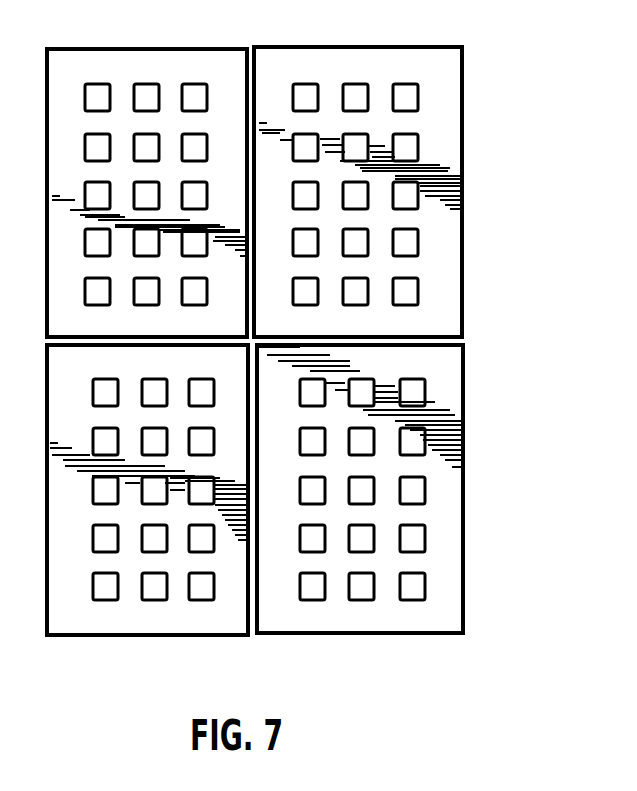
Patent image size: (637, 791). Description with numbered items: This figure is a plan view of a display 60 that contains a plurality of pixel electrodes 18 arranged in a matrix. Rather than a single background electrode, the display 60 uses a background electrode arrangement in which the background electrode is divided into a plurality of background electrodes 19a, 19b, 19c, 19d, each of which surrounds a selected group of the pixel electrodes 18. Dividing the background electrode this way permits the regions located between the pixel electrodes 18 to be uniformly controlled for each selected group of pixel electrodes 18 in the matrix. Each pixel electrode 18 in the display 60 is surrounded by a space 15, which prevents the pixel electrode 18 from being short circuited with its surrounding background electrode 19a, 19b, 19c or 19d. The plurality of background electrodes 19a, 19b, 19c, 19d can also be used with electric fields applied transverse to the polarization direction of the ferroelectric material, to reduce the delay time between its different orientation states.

The display 60 is at (522, 158).
The background electrode 19a is at (147, 193).
The background electrode 19b is at (358, 192).
The background electrode 19c is at (147, 490).
The background electrode 19d is at (360, 489).
The space 15 is at (193, 92).
The pixel electrode 18 is at (146, 92).